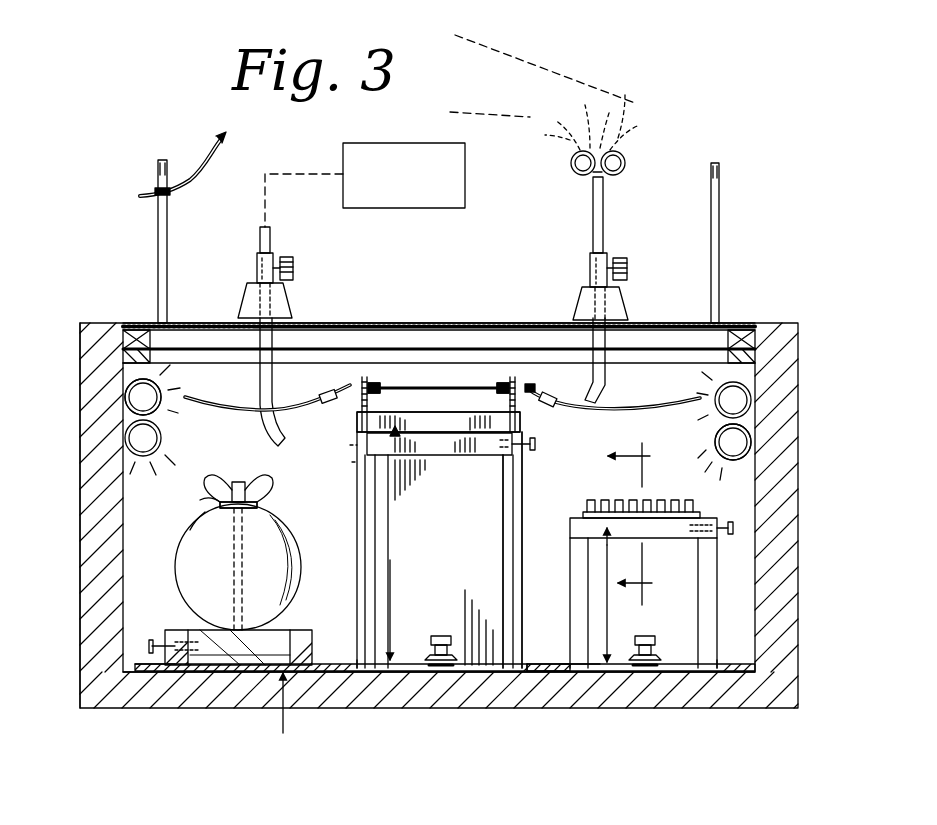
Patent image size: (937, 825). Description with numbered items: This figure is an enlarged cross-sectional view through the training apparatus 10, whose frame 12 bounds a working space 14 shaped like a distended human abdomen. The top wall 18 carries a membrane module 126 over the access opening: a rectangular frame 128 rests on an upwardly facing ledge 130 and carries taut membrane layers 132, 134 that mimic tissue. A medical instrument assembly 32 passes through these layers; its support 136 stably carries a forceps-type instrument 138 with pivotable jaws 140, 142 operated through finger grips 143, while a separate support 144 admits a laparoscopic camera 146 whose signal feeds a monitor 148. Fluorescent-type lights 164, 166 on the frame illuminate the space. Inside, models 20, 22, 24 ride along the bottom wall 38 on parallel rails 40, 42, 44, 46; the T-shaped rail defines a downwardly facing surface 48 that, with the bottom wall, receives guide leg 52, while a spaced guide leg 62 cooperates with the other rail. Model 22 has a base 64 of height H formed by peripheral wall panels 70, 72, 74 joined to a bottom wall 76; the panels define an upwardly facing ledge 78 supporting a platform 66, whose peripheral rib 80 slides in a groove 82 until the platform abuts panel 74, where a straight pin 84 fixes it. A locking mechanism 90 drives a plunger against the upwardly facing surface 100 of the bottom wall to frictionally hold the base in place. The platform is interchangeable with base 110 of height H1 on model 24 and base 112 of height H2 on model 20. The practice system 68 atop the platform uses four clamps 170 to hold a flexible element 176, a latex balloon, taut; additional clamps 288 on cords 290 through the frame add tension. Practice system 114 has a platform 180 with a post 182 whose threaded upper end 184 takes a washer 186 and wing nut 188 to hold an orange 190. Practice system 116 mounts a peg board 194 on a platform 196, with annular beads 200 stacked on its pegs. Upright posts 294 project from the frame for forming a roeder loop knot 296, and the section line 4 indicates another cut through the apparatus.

The training apparatus 10 is at (768, 180).
The frame 12 is at (805, 356).
The working space 14 is at (459, 280).
The top wall 18 is at (90, 322).
The model 20 is at (236, 537).
The model 22 is at (527, 540).
The model 24 is at (722, 542).
The medical instrument assembly 32 is at (608, 208).
The bottom wall 38 is at (418, 695).
The rail 40 is at (740, 670).
The rail 42 is at (572, 672).
The rail 44 is at (332, 670).
The rail 46 is at (142, 672).
The downwardly facing surface 48 is at (546, 672).
The guide leg 52 is at (528, 672).
The guide leg 62 is at (358, 670).
The base 64 is at (527, 596).
The platform 66 is at (505, 436).
The practice system 68 is at (480, 410).
The peripheral wall panel 70 is at (516, 650).
The peripheral wall panel 72 is at (357, 628).
The peripheral wall panel 74 is at (500, 490).
The bottom wall 76 is at (420, 652).
The upwardly facing ledge 78 is at (402, 410).
The peripheral rib 80 is at (350, 445).
The groove 82 is at (357, 462).
The straight pin 84 is at (536, 446).
The locking mechanism 90 is at (456, 645).
The upwardly facing surface 100 is at (483, 640).
The base 110 is at (725, 540).
The base 112 is at (166, 640).
The practice system 114 is at (282, 514).
The practice system 116 is at (668, 508).
The membrane module 126 is at (397, 316).
The rectangular frame 128 is at (128, 322).
The upwardly facing ledge 130 is at (258, 335).
The membrane layer 132 is at (335, 230).
The membrane layer 134 is at (250, 412).
The support 136 is at (577, 177).
The instrument 138 is at (590, 196).
The pivotable jaw 140 is at (605, 390).
The pivotable jaw 142 is at (556, 398).
The finger grips 143 is at (560, 158).
The support 144 is at (300, 313).
The laparoscopic camera 146 is at (174, 416).
The monitor 148 is at (365, 185).
The fluorescent-type light 164 is at (752, 332).
The fluorescent-type light 166 is at (160, 420).
The clamp 170 is at (437, 410).
The flexible element 176 is at (466, 386).
The platform 180 is at (231, 669).
The post 182 is at (250, 545).
The upper end 184 is at (240, 480).
The washer 186 is at (200, 500).
The wing nut 188 is at (190, 530).
The orange 190 is at (238, 567).
The peg board 194 is at (700, 512).
The platform 196 is at (732, 532).
The annular beads 200 is at (600, 505).
The clamp 288 is at (373, 382).
The cord 290 is at (337, 385).
The upright post 294 is at (160, 158).
The roeder loop knot 296 is at (178, 180).
The height H is at (391, 610).
The height H1 is at (612, 595).
The height H2 is at (278, 717).
The section line 4 is at (639, 523).